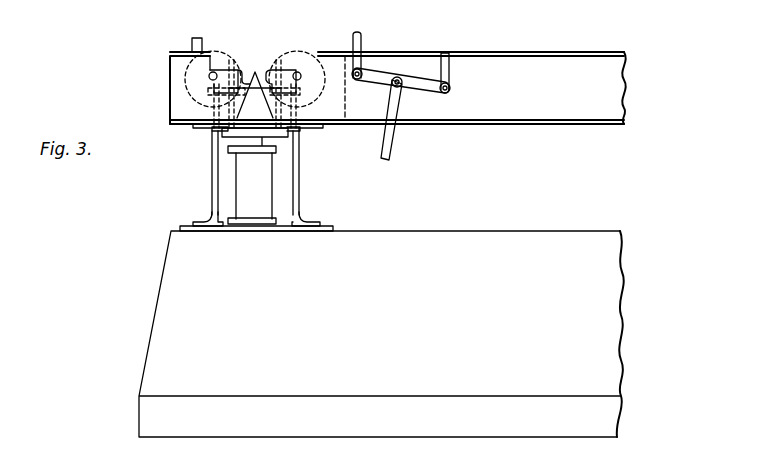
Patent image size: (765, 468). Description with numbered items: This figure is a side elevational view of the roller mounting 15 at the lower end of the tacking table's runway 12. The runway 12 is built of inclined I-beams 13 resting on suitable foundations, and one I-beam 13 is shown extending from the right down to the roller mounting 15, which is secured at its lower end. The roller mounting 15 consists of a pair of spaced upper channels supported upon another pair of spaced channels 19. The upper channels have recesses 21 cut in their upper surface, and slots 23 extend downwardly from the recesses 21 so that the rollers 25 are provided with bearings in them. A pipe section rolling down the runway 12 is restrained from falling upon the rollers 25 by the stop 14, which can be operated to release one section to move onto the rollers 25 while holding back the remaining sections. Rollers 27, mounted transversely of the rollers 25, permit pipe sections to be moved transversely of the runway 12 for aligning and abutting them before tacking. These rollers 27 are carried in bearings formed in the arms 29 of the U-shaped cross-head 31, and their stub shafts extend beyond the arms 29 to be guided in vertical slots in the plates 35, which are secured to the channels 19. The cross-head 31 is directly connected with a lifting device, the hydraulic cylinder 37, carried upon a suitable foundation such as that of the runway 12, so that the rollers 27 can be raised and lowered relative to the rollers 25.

The sloping runway 12 is at (533, 126).
The I-beam 13 is at (550, 52).
The stop 14 is at (362, 40).
The roller mounting 15 is at (242, 68).
The channels 19 is at (211, 216).
The recesses 21 is at (238, 66).
The slots 23 is at (209, 78).
The rollers 25 is at (216, 51).
The rollers 27 is at (236, 60).
The arms 29 is at (215, 133).
The U-shaped cross-head 31 is at (298, 153).
The plates 35 is at (293, 173).
The hydraulic cylinder 37 is at (252, 188).